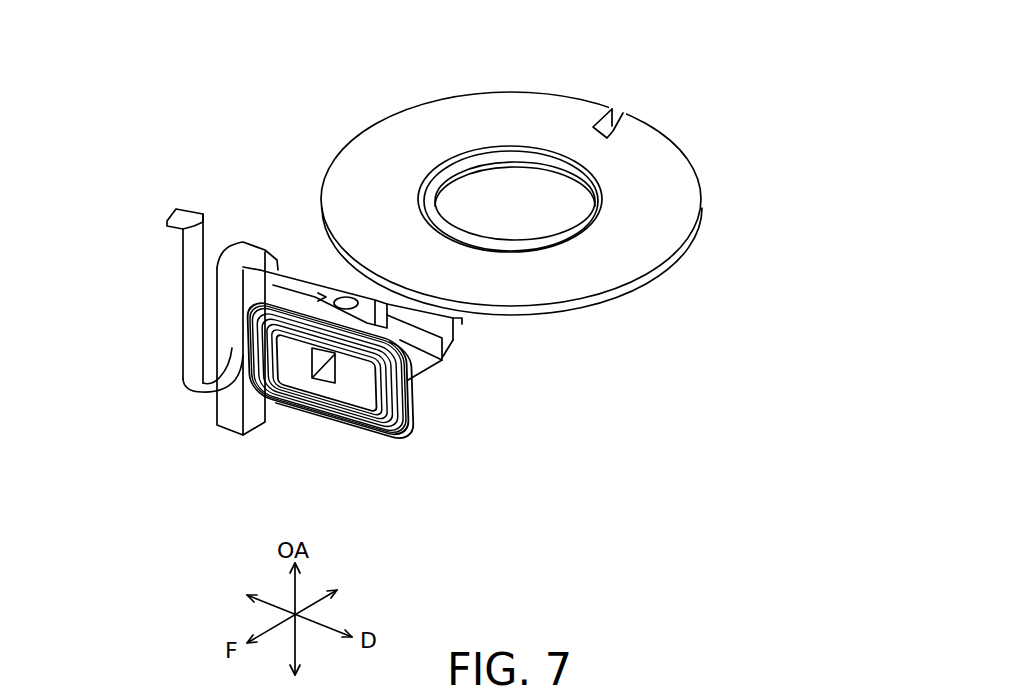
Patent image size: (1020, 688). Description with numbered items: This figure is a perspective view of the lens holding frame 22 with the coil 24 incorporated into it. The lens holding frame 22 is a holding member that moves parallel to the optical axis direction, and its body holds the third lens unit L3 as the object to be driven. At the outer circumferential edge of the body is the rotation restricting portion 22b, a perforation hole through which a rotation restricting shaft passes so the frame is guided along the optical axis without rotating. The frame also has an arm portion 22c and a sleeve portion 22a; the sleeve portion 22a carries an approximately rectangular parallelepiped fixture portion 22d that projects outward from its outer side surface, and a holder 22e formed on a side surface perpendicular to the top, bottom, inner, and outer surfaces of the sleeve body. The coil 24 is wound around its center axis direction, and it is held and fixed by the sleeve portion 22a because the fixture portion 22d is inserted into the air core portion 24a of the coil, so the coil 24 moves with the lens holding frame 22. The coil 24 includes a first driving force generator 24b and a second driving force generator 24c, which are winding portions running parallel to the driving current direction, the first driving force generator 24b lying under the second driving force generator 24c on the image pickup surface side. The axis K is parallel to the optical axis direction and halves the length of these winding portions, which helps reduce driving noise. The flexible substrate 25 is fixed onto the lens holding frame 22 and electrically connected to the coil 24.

The lens holding frame 22 is at (391, 117).
The sleeve portion 22a is at (462, 321).
The rotation restricting portion 22b is at (614, 127).
The arm portion 22c is at (418, 358).
The fixture portion 22d is at (412, 410).
The holder 22e is at (228, 409).
The coil 24 is at (390, 438).
The air core portion 24a is at (342, 432).
The first driving force generator 24b is at (302, 417).
The second driving force generator 24c is at (292, 328).
The flexible substrate 25 is at (190, 290).
The axis K is at (320, 380).
The third lens unit L3 is at (482, 190).